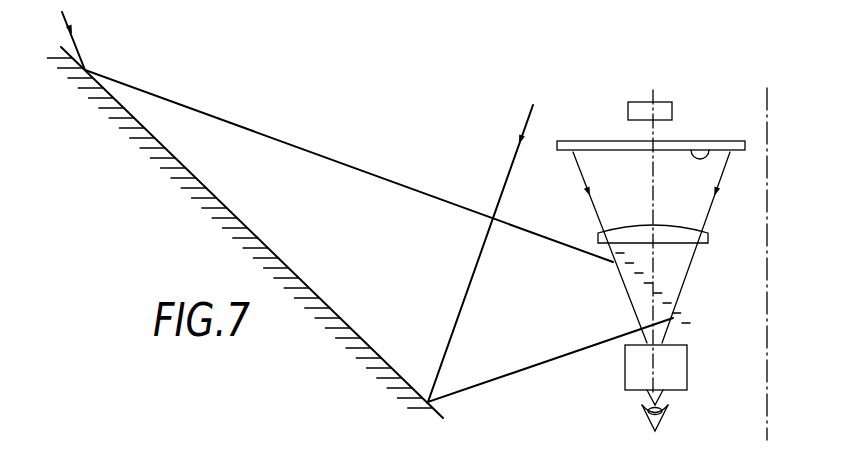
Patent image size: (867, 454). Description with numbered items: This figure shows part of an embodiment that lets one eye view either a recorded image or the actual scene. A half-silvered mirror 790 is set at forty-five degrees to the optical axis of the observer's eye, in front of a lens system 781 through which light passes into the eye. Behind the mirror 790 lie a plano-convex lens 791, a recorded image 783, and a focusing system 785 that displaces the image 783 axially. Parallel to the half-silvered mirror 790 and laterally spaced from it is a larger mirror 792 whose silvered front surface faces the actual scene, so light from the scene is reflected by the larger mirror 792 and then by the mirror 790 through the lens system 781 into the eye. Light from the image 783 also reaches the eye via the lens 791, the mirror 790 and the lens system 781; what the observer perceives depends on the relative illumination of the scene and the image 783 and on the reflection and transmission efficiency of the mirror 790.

The lens system 781 is at (687, 367).
The recorded image 783 is at (703, 152).
The focusing system 785 is at (628, 111).
The half-silvered mirror 790 is at (681, 326).
The plano-convex lens 791 is at (708, 240).
The larger mirror 792 is at (264, 241).